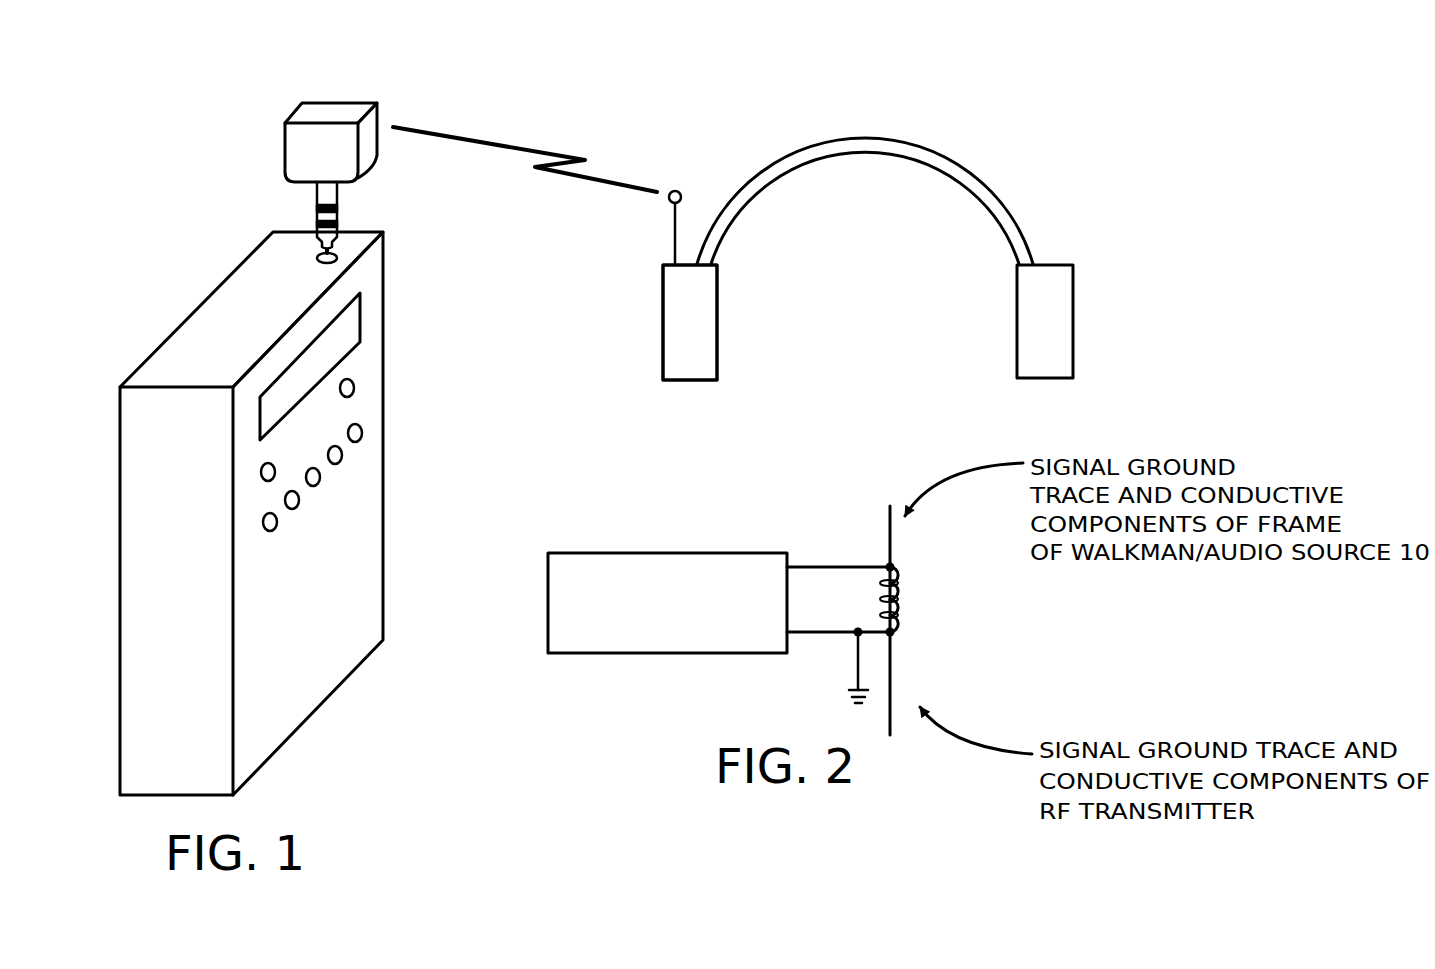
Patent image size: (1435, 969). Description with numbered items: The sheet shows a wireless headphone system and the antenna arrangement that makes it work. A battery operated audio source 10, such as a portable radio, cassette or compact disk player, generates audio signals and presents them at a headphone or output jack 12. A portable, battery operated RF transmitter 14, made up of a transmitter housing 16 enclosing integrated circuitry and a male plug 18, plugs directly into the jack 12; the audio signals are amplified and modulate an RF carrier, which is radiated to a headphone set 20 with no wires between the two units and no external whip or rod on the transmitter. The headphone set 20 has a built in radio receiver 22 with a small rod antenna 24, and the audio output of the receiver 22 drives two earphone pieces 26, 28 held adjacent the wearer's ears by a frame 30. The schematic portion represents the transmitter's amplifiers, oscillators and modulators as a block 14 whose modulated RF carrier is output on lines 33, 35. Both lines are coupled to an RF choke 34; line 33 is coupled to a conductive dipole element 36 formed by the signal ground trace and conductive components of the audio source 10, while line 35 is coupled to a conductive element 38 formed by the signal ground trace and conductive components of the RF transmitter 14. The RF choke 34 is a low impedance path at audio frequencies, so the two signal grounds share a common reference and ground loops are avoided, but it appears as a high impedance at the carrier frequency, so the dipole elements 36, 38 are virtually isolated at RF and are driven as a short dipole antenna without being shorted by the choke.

In FIG. 1, the audio source 10 is at (322, 710).
In FIG. 1, the headphone or output jack 12 is at (320, 266).
In FIG. 1, the RF transmitter 14 is at (338, 157).
In FIG. 2, the RF transmitter 14 is at (720, 653).
In FIG. 1, the transmitter housing 16 is at (285, 158).
In FIG. 1, the male plug 18 is at (340, 193).
In FIG. 1, the headphone set 20 is at (835, 233).
In FIG. 1, the radio receiver 22 is at (663, 333).
In FIG. 1, the rod antenna 24 is at (683, 222).
In FIG. 1, the earphone piece 26 is at (735, 315).
In FIG. 1, the earphone piece 28 is at (995, 314).
In FIG. 1, the frame 30 is at (842, 152).
In FIG. 2, the line 33 is at (827, 565).
In FIG. 2, the RF choke 34 is at (905, 604).
In FIG. 2, the line 35 is at (823, 632).
In FIG. 2, the conductive dipole element 36 is at (892, 540).
In FIG. 2, the conductive element 38 is at (892, 660).